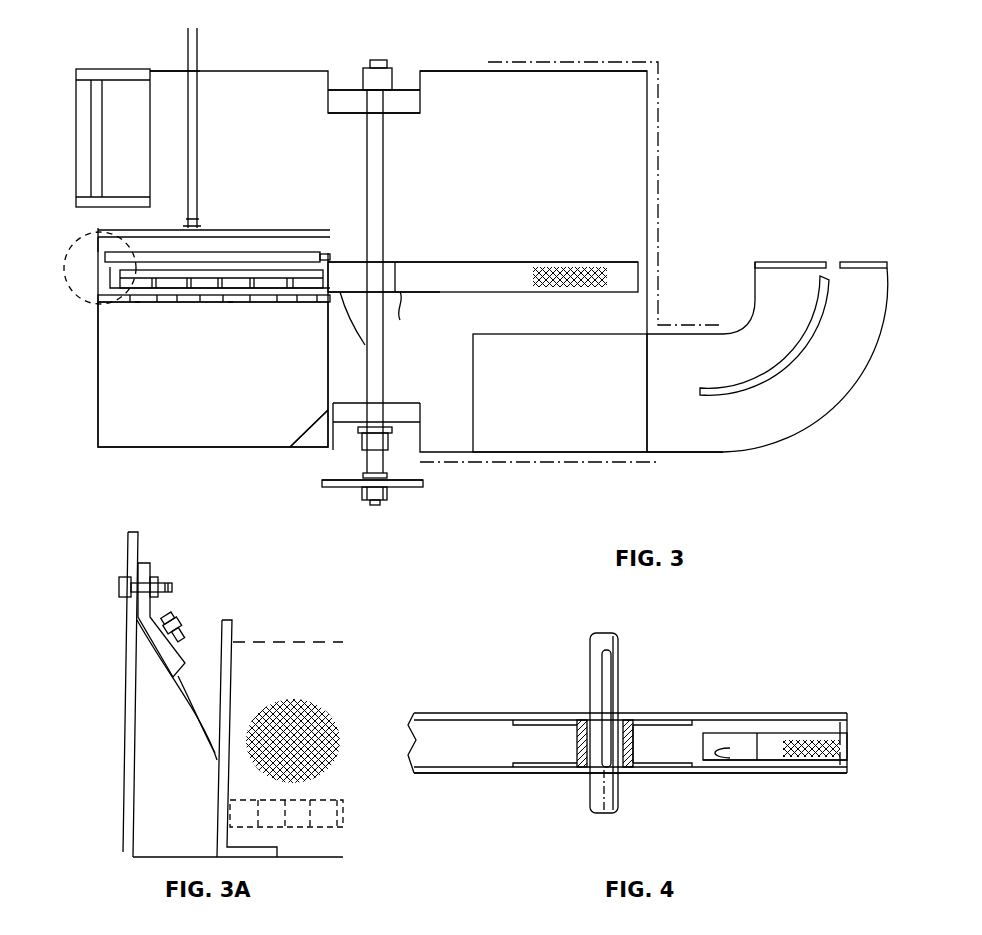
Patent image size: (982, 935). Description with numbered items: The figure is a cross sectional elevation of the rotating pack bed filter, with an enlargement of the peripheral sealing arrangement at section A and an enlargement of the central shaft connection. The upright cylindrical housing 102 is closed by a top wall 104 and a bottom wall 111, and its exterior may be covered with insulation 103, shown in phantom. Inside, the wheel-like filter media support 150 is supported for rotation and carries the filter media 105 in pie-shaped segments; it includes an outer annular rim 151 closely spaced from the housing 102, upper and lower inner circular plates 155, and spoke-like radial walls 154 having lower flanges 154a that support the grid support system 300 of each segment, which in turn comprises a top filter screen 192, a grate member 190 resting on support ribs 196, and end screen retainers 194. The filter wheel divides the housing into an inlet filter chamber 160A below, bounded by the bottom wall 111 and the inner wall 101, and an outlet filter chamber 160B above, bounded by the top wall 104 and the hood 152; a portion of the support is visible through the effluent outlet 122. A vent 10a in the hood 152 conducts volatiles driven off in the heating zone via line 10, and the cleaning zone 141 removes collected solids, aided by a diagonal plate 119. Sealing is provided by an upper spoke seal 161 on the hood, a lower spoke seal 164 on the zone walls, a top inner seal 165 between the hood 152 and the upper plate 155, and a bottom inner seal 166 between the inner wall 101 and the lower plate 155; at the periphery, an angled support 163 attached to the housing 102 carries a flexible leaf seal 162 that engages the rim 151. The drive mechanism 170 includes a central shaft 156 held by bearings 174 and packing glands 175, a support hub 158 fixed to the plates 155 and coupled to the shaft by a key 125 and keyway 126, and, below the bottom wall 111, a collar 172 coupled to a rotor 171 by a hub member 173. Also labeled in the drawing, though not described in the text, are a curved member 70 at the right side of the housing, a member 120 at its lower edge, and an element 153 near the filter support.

In FIG. 3, the line 10 is at (197, 115).
In FIG. 3, the vent 10a is at (188, 226).
In FIG. 3, the chute 70 is at (785, 410).
In FIG. 3, the inner wall 101 is at (275, 390).
In FIG. 3, the housing 102 is at (97, 385).
In FIG. 3A, the housing 102 is at (123, 690).
In FIG. 3, the insulation 103 is at (660, 92).
In FIG. 3, the top wall 104 is at (160, 70).
In FIG. 3, the filter media 105 is at (575, 268).
In FIG. 3A, the filter media 105 is at (315, 715).
In FIG. 4, the filter media 105 is at (840, 750).
In FIG. 3, the bottom wall 111 is at (532, 448).
In FIG. 3, the diagonal plate 119 is at (315, 428).
In FIG. 3, the bottom plate 120 is at (680, 443).
In FIG. 3, the effluent outlet 122 is at (76, 148).
In FIG. 4, the key 125 is at (582, 770).
In FIG. 4, the keyway 126 is at (612, 680).
In FIG. 3, the cleaning zone 141 is at (213, 374).
In FIG. 3, the filter media support 150 is at (512, 296).
In FIG. 3A, the annular rim 151 is at (233, 640).
In FIG. 3, the hood 152 is at (305, 255).
In FIG. 3, the tray edge 153 is at (385, 245).
In FIG. 3, the radial wall 154 is at (505, 262).
In FIG. 4, the radial wall 154 is at (478, 725).
In FIG. 4, the lower flange 154a is at (473, 775).
In FIG. 3, the inner circular plate 155 is at (435, 292).
In FIG. 4, the inner circular plate 155 is at (525, 752).
In FIG. 3, the central shaft 156 is at (385, 205).
In FIG. 4, the central shaft 156 is at (620, 648).
In FIG. 3, the support hub 158 is at (395, 292).
In FIG. 4, the support hub 158 is at (648, 770).
In FIG. 3, the inlet filter chamber 160A is at (455, 370).
In FIG. 3, the outlet filter chamber 160B is at (533, 118).
In FIG. 3, the upper spoke seal 161 is at (110, 232).
In FIG. 3, the leaf seal 162 is at (108, 283).
In FIG. 3A, the leaf seal 162 is at (210, 740).
In FIG. 3A, the angled support 163 is at (148, 570).
In FIG. 3, the lower spoke seal 164 is at (185, 302).
In FIG. 3, the top inner seal 165 is at (255, 258).
In FIG. 3, the bottom inner seal 166 is at (372, 340).
In FIG. 3, the drive mechanism 170 is at (384, 520).
In FIG. 3, the rotor 171 is at (340, 487).
In FIG. 3, the collar 172 is at (395, 498).
In FIG. 3, the hub member 173 is at (360, 500).
In FIG. 3, the bearing 174 is at (392, 72).
In FIG. 3, the packing gland 175 is at (365, 103).
In FIG. 3, the grate member 190 is at (268, 303).
In FIG. 4, the grate member 190 is at (755, 735).
In FIG. 3, the top filter screen 192 is at (292, 300).
In FIG. 4, the top filter screen 192 is at (810, 733).
In FIG. 4, the end screen retainer 194 is at (728, 760).
In FIG. 3, the support rib 196 is at (140, 302).
In FIG. 4, the support rib 196 is at (818, 782).
In FIG. 4, the grid support system 300 is at (782, 745).
In FIG. 3, the section A is at (70, 254).